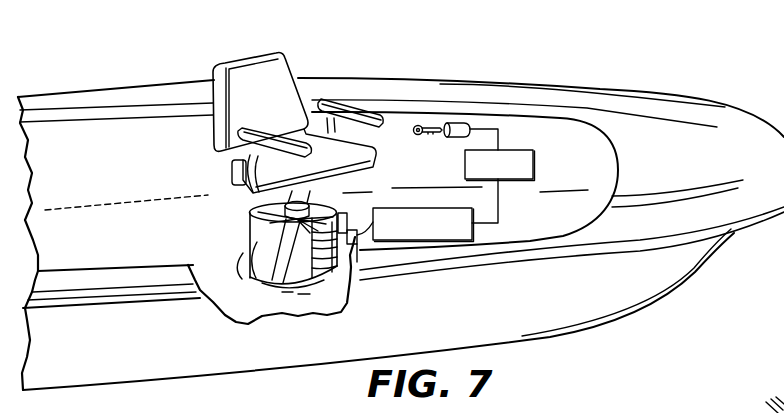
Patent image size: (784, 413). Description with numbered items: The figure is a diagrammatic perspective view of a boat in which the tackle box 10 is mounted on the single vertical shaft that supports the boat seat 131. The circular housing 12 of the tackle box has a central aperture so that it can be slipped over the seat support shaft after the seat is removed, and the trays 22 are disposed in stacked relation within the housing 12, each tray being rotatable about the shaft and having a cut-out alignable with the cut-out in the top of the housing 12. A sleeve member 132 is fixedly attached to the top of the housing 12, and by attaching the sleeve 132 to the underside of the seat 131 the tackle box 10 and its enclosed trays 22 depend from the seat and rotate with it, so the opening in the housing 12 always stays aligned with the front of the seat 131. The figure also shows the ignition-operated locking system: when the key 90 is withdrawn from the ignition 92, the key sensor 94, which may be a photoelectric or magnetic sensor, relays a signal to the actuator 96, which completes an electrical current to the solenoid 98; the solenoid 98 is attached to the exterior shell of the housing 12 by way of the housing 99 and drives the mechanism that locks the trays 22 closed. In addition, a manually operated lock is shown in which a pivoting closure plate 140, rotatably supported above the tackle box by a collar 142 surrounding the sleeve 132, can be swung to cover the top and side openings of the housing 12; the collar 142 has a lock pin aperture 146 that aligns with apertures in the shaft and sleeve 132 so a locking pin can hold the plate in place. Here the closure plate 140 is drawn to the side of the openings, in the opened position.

The tackle box 10 is at (228, 239).
The housing 12 is at (271, 257).
The trays 22 is at (316, 266).
The key 90 is at (421, 124).
The ignition 92 is at (458, 128).
The key sensor 94 is at (532, 166).
The actuator 96 is at (463, 222).
The solenoid 98 is at (357, 262).
The housing 99 is at (344, 215).
The seat 131 is at (237, 77).
The sleeve member 132 is at (296, 198).
The closure plate 140 is at (242, 278).
The collar 142 is at (308, 200).
The lock pin aperture 146 is at (271, 283).